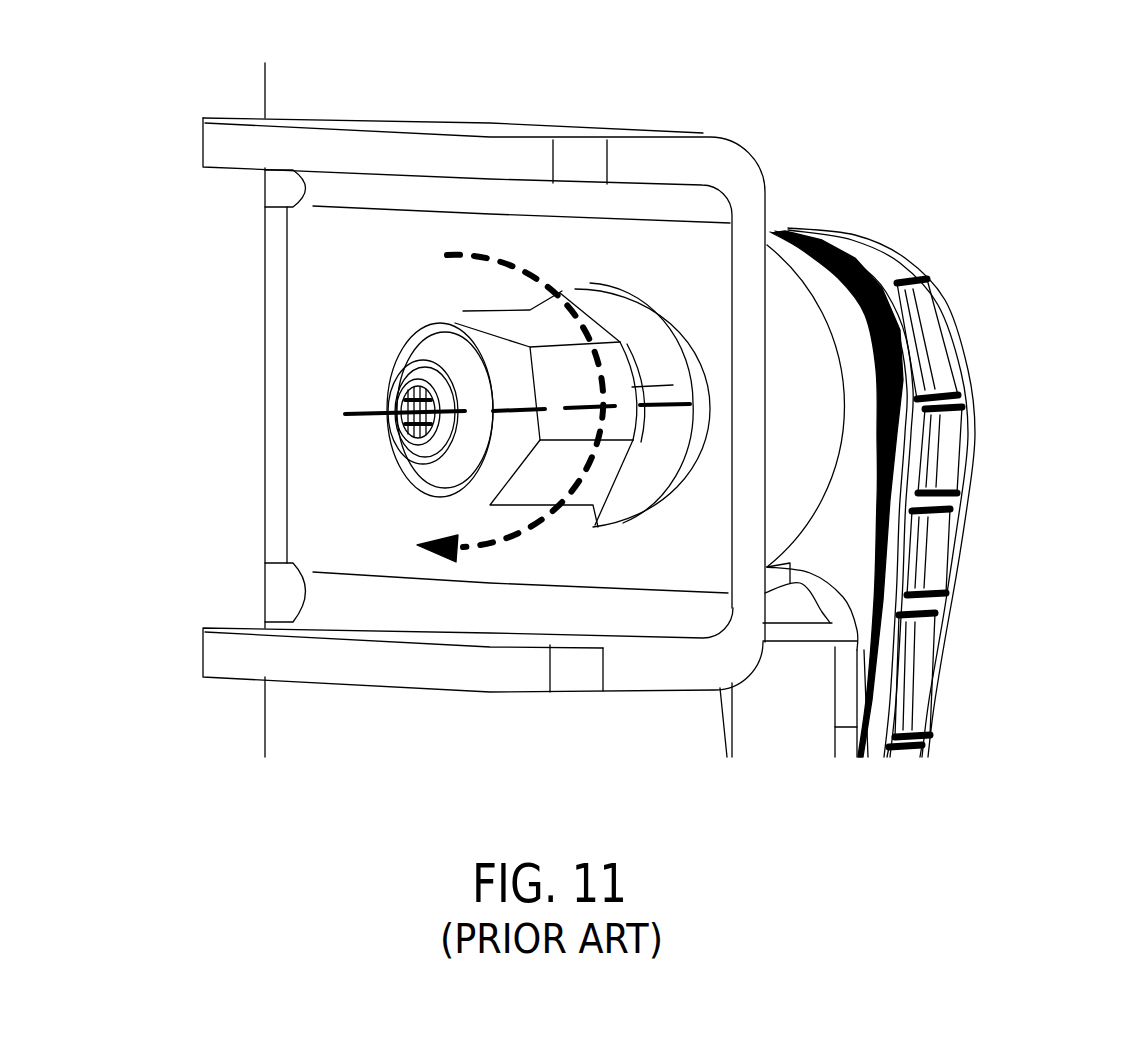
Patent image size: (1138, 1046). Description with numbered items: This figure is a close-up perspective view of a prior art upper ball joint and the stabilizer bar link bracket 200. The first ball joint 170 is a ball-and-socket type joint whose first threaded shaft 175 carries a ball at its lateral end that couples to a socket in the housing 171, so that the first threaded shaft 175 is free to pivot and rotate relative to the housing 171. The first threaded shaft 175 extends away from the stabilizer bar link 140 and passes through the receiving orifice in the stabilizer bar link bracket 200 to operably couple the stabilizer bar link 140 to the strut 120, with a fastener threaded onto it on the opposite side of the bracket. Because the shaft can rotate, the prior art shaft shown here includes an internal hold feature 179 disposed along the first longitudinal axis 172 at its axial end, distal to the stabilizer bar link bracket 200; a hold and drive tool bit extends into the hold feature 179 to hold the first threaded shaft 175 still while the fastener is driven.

The strut 120 is at (310, 398).
The stabilizer bar link bracket 200 is at (503, 419).
The first ball joint 170 is at (938, 482).
The housing 171 is at (1001, 339).
The first threaded shaft 175 is at (436, 390).
The first longitudinal axis 172 is at (425, 385).
The hold feature 179 is at (304, 432).
The stabilizer bar link 140 is at (978, 677).